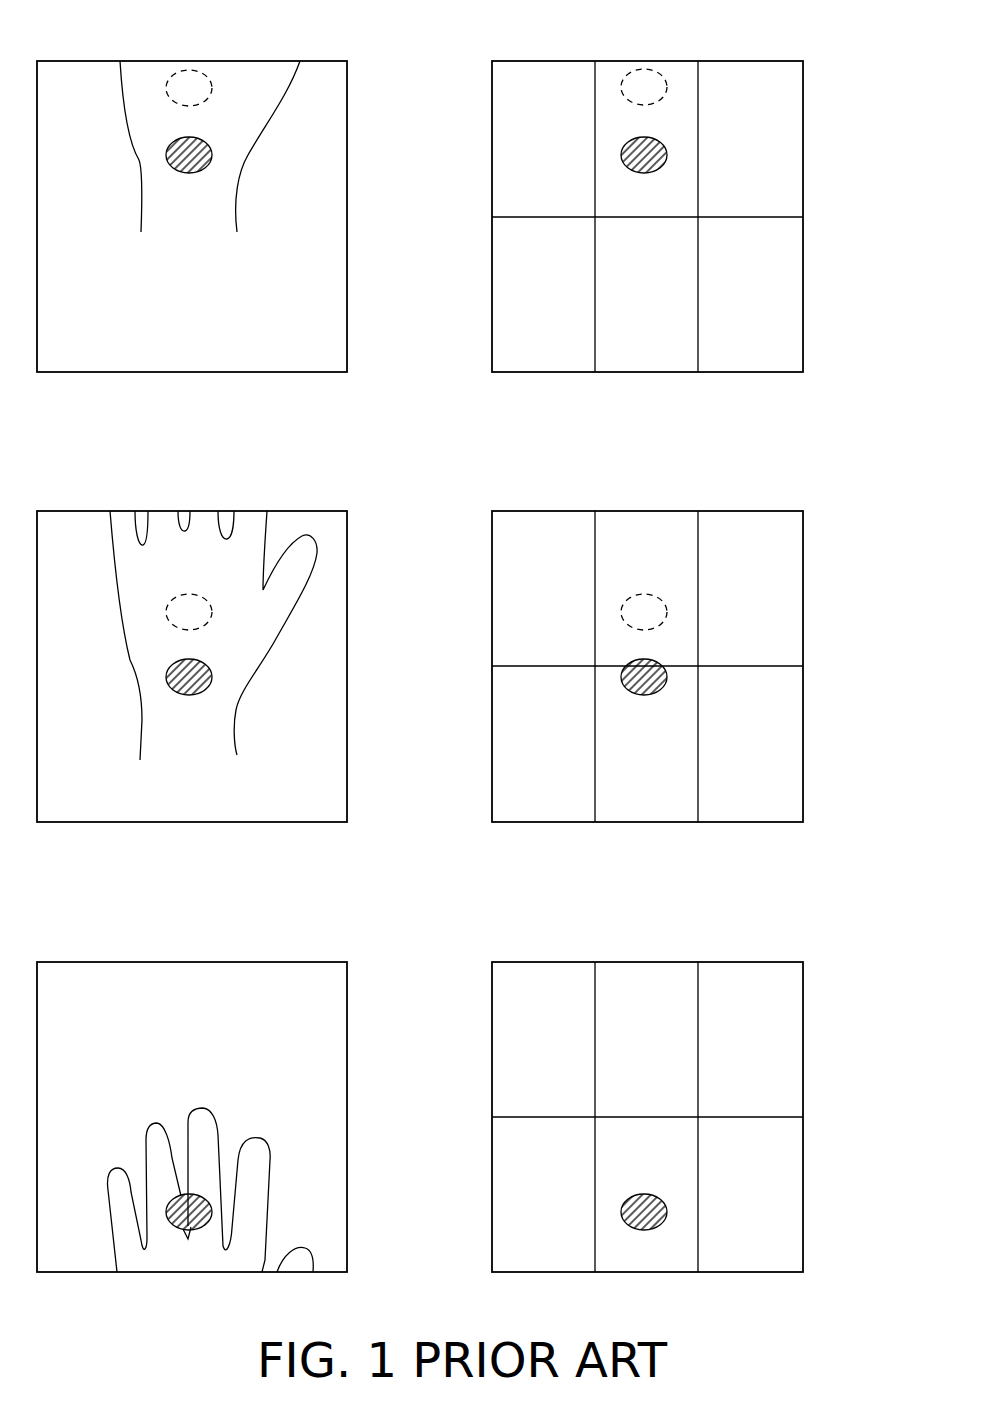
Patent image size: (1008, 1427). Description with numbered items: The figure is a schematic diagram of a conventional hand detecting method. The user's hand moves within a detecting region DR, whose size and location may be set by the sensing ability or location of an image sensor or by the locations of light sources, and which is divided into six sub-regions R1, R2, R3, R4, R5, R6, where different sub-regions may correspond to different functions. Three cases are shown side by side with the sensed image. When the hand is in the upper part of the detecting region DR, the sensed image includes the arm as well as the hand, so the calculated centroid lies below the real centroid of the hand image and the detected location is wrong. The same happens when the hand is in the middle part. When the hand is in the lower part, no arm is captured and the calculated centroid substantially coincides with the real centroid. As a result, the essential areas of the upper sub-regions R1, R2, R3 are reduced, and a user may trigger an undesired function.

The detecting region DR is at (803, 104).
The sub-region R1 is at (540, 75).
The sub-region R2 is at (683, 75).
The sub-region R3 is at (764, 75).
The sub-region R4 is at (543, 358).
The sub-region R5 is at (656, 358).
The sub-region R6 is at (751, 358).